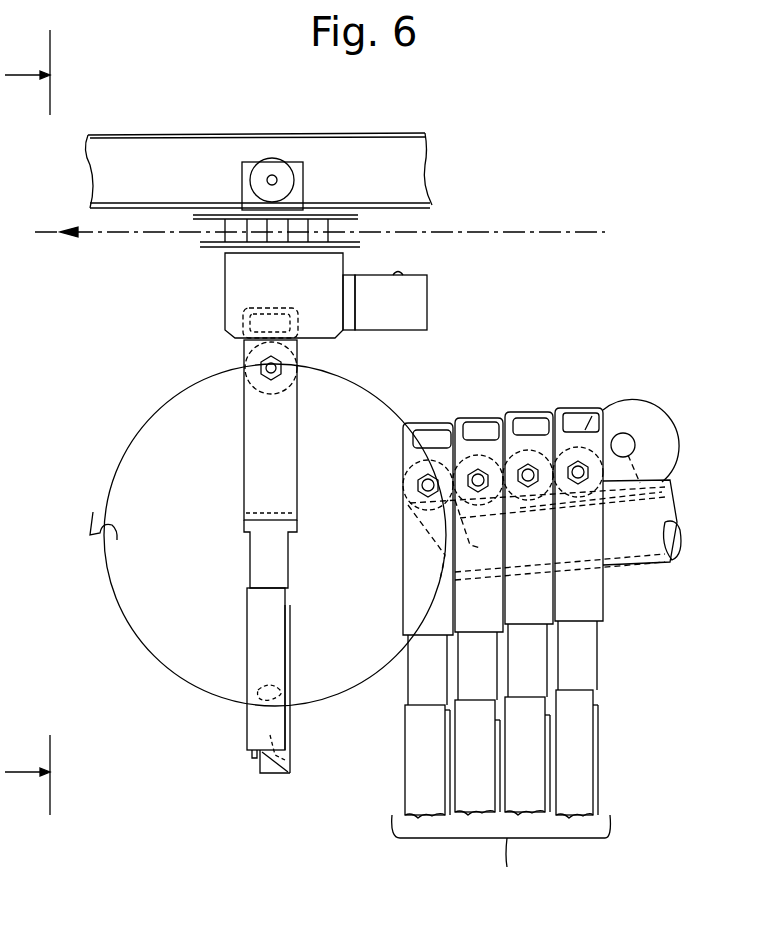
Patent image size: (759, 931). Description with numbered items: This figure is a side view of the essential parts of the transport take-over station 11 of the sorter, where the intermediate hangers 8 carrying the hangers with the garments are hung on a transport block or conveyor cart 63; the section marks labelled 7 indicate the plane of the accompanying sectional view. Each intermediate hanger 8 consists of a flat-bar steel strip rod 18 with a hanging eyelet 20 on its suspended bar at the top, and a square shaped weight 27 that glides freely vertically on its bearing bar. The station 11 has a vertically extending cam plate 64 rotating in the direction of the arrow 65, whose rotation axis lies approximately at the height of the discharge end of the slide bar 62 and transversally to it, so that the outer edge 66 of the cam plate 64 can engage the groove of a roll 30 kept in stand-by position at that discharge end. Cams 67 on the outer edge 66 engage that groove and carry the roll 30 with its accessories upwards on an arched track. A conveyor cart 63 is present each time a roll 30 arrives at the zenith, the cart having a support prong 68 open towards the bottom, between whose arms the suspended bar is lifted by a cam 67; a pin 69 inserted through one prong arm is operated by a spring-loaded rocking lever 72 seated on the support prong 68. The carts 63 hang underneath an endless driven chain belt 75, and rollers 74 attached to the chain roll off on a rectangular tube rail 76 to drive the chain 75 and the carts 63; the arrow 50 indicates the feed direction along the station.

The section line 7- 7 is at (43, 422).
The intermediate hanger 8 is at (501, 794).
The transport take-over station 11 is at (467, 212).
The flat-bar steel strip rod 18 is at (415, 553).
The hanging eyelet 20 is at (430, 437).
The weight 27 is at (252, 633).
The roll 30 is at (248, 365).
The direction of feed 50 is at (500, 372).
The slide bar 62 is at (650, 552).
The conveyor cart 63 is at (224, 293).
The cam plate 64 is at (140, 430).
The arrow 65 is at (370, 472).
The outer edge 66 is at (360, 383).
The cam 67 is at (95, 500).
The support prong 68 is at (333, 272).
The pin 69 is at (225, 328).
The spring-loaded rocking lever 72 is at (420, 310).
The roller 74 is at (272, 160).
The chain belt 75 is at (322, 222).
The rectangular tube rail 76 is at (150, 150).